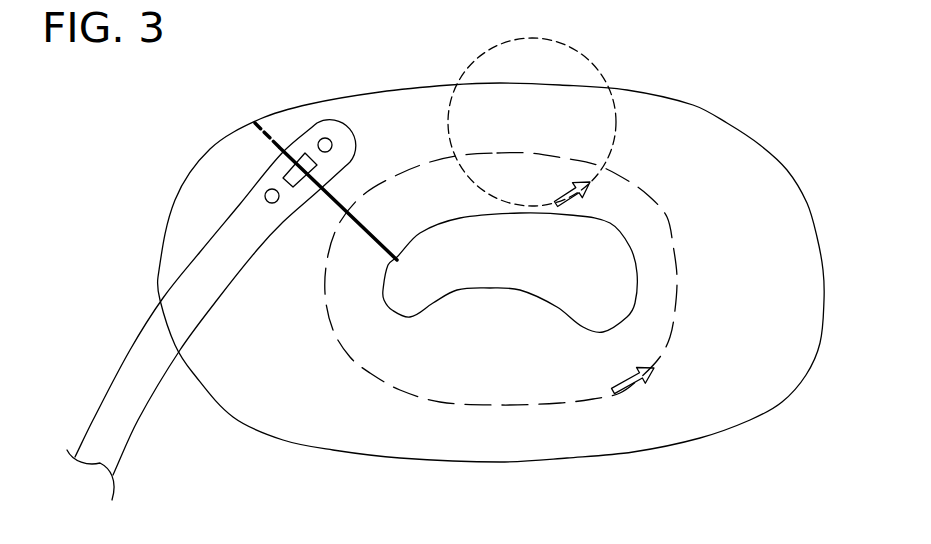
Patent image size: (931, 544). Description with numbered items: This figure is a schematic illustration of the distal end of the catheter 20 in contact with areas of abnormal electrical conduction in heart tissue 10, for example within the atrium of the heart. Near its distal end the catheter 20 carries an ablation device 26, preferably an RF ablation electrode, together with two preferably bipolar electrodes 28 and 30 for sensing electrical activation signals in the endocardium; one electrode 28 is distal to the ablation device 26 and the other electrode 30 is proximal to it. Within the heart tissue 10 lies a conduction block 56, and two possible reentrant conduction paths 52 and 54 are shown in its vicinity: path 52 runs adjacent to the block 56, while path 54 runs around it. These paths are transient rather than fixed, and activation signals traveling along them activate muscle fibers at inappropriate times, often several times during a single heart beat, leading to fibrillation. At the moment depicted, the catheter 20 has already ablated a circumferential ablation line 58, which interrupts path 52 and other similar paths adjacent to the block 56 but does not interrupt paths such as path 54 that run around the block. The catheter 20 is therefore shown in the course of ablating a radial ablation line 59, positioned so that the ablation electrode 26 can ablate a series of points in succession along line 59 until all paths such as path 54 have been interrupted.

The heart tissue 10 is at (146, 178).
The catheter 20 is at (120, 371).
The ablation device 26 is at (303, 155).
The electrode 28 is at (324, 139).
The electrode 30 is at (268, 191).
The reentrant conduction path 52 is at (580, 53).
The reentrant conduction path 54 is at (660, 195).
The conduction block 56 is at (627, 290).
The circumferential ablation line 58 is at (730, 122).
The radial ablation line 59 is at (323, 198).